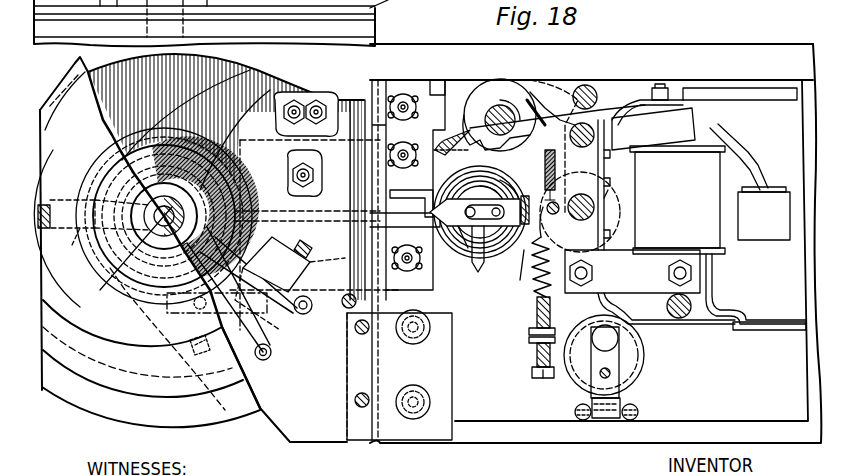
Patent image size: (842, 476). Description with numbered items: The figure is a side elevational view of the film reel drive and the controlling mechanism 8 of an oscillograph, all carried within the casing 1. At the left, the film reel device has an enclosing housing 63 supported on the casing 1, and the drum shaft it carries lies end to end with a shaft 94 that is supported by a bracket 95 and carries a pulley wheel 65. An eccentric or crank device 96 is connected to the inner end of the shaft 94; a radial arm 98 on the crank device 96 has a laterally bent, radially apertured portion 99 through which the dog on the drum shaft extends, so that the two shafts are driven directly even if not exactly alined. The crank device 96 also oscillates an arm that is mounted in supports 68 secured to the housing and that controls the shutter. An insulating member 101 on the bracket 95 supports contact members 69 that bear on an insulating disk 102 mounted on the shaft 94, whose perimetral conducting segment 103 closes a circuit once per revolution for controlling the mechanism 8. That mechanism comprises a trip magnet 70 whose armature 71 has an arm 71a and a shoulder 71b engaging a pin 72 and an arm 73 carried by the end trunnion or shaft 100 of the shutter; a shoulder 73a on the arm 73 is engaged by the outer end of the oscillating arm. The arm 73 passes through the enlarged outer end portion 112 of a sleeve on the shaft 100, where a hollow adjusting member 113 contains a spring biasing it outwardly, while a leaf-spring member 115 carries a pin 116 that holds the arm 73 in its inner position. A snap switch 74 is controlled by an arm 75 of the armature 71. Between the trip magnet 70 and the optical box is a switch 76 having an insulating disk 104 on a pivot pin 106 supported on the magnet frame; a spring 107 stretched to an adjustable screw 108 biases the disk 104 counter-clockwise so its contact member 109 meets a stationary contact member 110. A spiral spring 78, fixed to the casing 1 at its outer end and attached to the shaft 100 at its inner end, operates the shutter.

The casing 1 is at (695, 28).
The controlling mechanism 8 is at (465, 350).
The enclosing housing 63 is at (262, 118).
The pulley wheel 65 is at (225, 415).
The supports 68 is at (250, 170).
The contact members 69 is at (274, 240).
The trip magnet 70 is at (714, 188).
The armature 71 is at (694, 124).
The arm 71a is at (520, 90).
The shoulder 71b is at (474, 90).
The pin 72 is at (479, 272).
The arm 73 is at (430, 208).
The shoulder 73a is at (415, 185).
The snap switch 74 is at (444, 90).
The arm 75 is at (565, 86).
The switch 76 is at (604, 224).
The spiral spring 78 is at (495, 262).
The shaft 94 is at (108, 276).
The bracket 95 is at (324, 436).
The crank device 96 is at (108, 168).
The radial arm 98 is at (70, 246).
The laterally bent portion 99 is at (70, 196).
The end trunnion or shaft 100 is at (500, 178).
The insulating member 101 is at (280, 322).
The insulating disk 102 is at (258, 98).
The conducting segment 103 is at (236, 80).
The insulating disk 104 is at (605, 262).
The pivot pin 106 is at (620, 186).
The spring 107 is at (552, 290).
The adjustable screw 108 is at (532, 360).
The contact member 109 is at (588, 186).
The stationary contact member 110 is at (639, 104).
The enlarged outer end portion 112 is at (543, 172).
The adjusting member 113 is at (522, 300).
The leaf-spring member 115 is at (468, 250).
The pin 116 is at (455, 236).